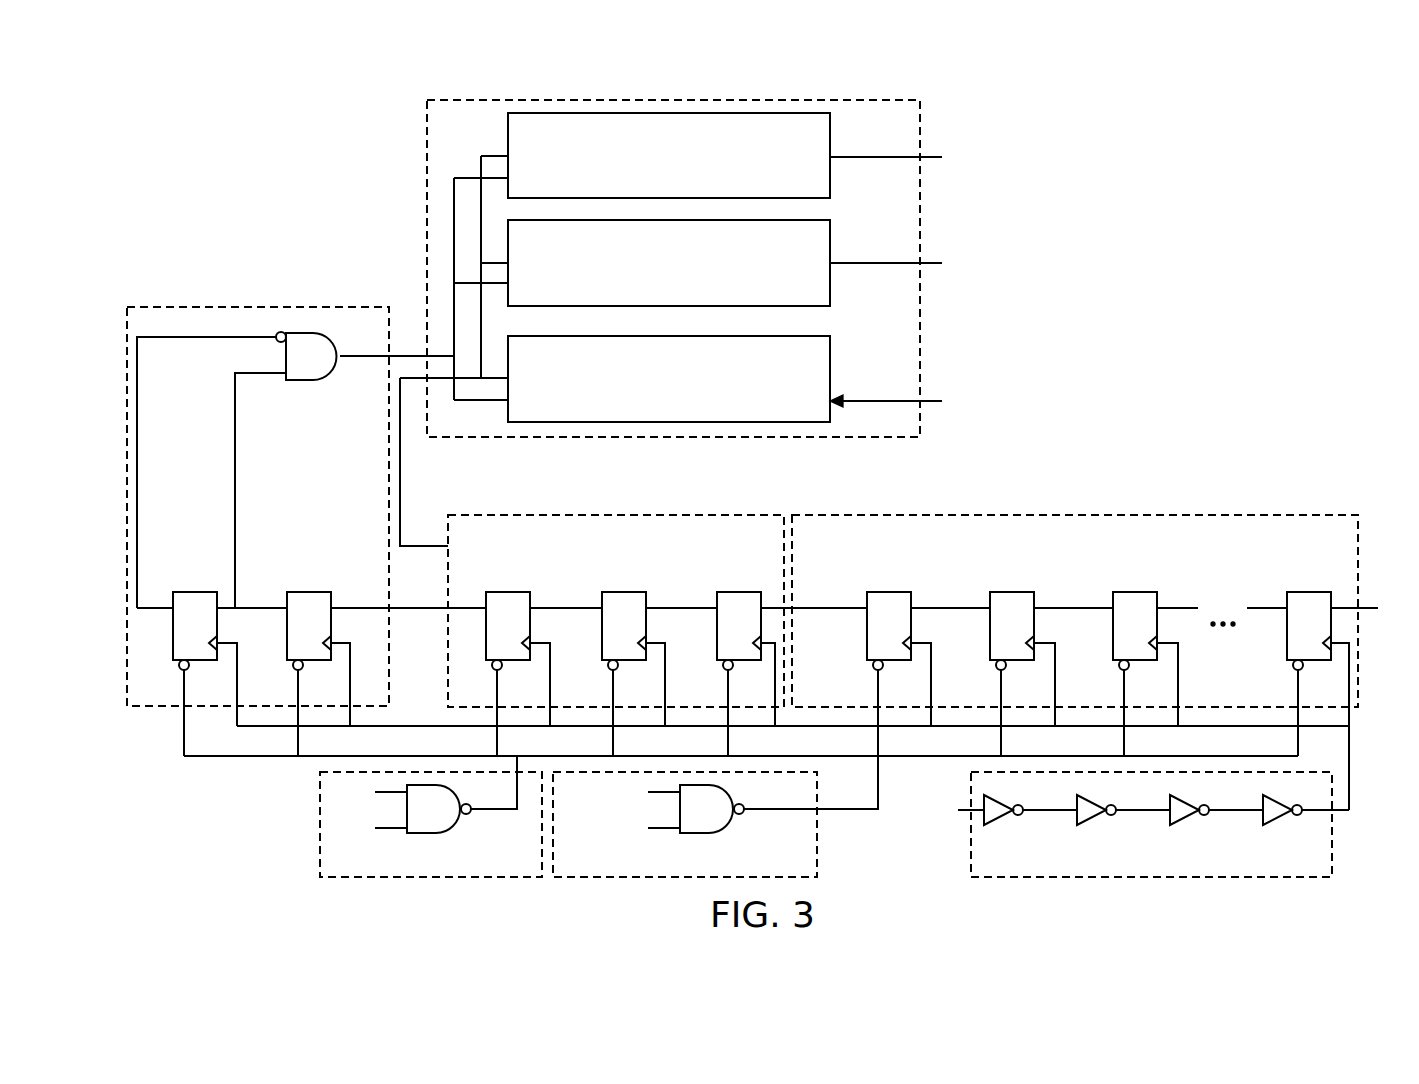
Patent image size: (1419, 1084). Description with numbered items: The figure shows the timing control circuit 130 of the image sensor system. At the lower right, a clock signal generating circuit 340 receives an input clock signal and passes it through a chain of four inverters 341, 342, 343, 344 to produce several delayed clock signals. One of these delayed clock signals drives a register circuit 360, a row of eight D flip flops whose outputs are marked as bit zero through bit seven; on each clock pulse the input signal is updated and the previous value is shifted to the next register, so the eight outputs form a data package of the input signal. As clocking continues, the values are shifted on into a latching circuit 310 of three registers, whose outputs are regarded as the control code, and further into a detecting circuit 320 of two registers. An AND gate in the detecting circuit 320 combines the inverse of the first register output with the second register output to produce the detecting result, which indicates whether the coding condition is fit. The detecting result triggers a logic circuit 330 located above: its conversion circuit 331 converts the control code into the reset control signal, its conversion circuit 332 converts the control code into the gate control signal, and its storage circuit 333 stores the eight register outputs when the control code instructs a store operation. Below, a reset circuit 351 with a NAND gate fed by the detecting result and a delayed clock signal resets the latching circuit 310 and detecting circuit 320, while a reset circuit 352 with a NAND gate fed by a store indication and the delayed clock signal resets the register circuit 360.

The timing control circuit 130 is at (196, 121).
The detecting circuit 320 is at (257, 306).
The logic circuit 330 is at (427, 227).
The conversion circuit 331 is at (830, 181).
The conversion circuit 332 is at (830, 289).
The storage circuit 333 is at (830, 356).
The latching circuit 310 is at (470, 515).
The register circuit 360 is at (1320, 516).
The reset circuit 351 is at (320, 845).
The reset circuit 352 is at (817, 857).
The clock signal generating circuit 340 is at (1332, 857).
The inverter 341 is at (997, 825).
The inverter 342 is at (1090, 825).
The inverter 343 is at (1183, 825).
The inverter 344 is at (1276, 825).